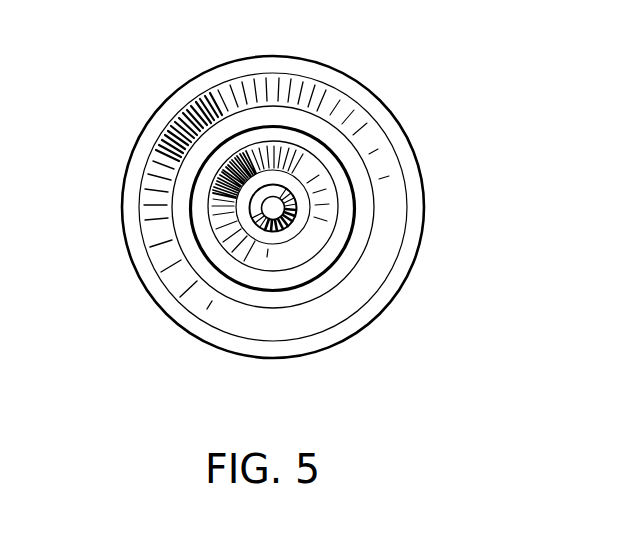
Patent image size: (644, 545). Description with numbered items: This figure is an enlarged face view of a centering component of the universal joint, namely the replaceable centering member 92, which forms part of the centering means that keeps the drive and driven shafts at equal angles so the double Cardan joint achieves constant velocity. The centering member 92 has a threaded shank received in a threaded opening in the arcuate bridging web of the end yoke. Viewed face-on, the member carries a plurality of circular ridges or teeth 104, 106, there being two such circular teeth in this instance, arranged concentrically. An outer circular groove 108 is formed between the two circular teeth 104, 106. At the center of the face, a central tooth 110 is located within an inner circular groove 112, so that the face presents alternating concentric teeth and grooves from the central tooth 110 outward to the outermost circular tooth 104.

The replaceable centering member 92 is at (150, 109).
The circular ridge or tooth 104 is at (300, 357).
The circular ridge or tooth 106 is at (295, 278).
The outer circular groove 108 is at (288, 304).
The central tooth 110 is at (283, 197).
The inner circular groove 112 is at (273, 238).